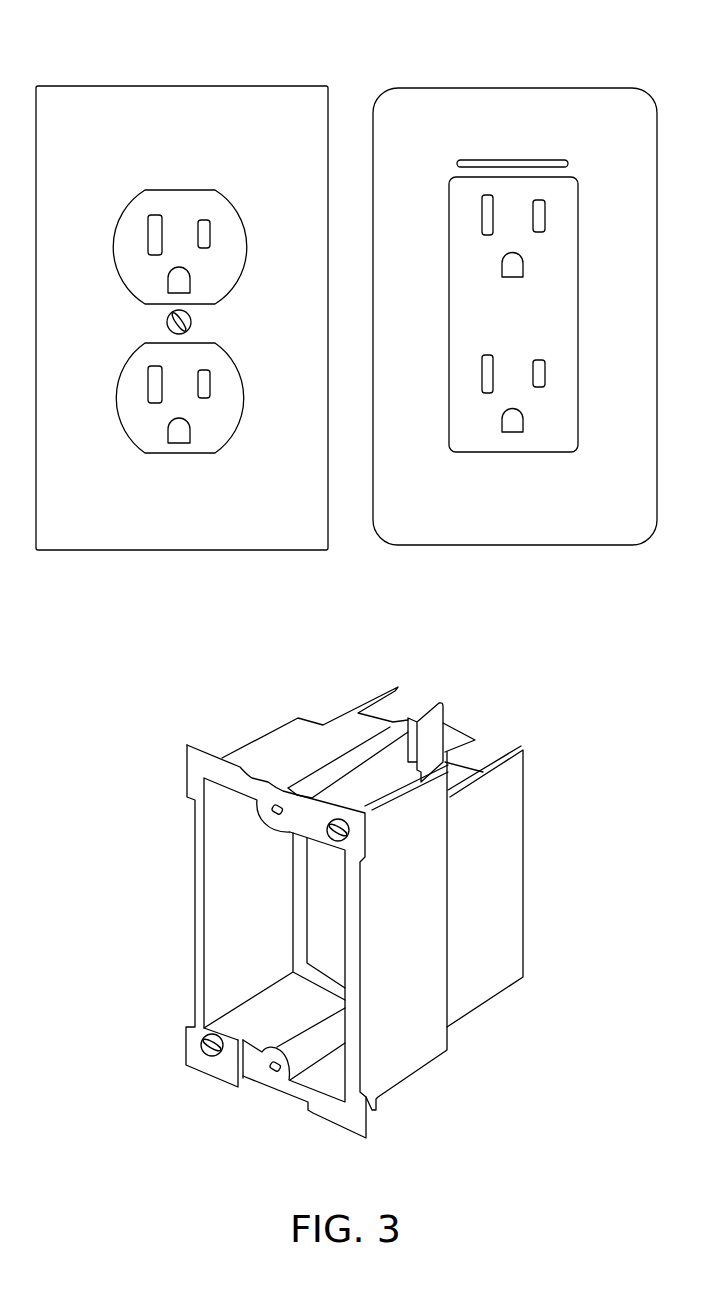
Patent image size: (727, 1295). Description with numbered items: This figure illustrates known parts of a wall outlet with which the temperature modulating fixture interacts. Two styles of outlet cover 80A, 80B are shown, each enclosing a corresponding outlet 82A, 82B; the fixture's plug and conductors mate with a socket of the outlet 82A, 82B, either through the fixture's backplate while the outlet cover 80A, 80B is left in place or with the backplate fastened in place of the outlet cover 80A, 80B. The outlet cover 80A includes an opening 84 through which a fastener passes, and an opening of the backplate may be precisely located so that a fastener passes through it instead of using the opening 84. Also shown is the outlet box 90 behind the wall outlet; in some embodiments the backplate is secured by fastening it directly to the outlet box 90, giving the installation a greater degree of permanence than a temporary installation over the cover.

The outlet cover 80A is at (257, 96).
The outlet cover 80B is at (572, 100).
The outlet 82A is at (118, 168).
The outlet 82B is at (452, 153).
The opening of outlet cover 84 is at (191, 320).
The outlet box 90 is at (278, 742).